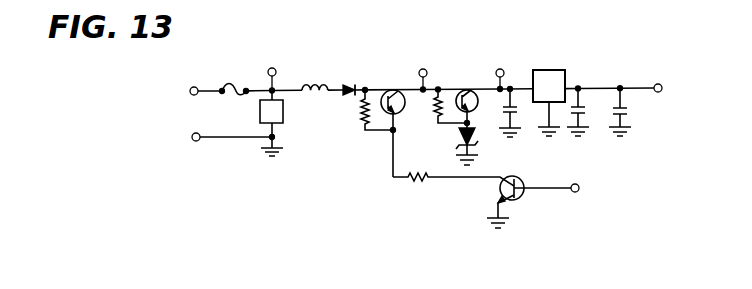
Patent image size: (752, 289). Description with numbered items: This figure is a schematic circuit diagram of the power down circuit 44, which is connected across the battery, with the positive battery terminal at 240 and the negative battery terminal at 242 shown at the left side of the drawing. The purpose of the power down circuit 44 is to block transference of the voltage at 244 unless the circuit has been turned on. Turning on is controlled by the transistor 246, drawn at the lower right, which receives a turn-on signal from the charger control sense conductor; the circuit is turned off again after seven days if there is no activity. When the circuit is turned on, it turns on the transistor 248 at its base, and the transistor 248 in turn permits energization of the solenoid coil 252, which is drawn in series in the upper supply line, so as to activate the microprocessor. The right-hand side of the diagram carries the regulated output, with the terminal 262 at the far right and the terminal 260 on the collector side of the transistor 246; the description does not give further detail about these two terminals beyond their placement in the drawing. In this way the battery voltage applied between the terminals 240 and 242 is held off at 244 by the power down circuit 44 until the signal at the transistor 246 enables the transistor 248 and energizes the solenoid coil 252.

The positive battery terminal 240 is at (191, 88).
The negative battery terminal 242 is at (196, 141).
The voltage transference point 244 is at (283, 115).
The solenoid coil 252 is at (322, 83).
The transistor 248 is at (396, 90).
The power down circuit 44 is at (590, 45).
The output terminal 262 is at (597, 86).
The output terminal 260 is at (548, 185).
The transistor 246 is at (523, 196).